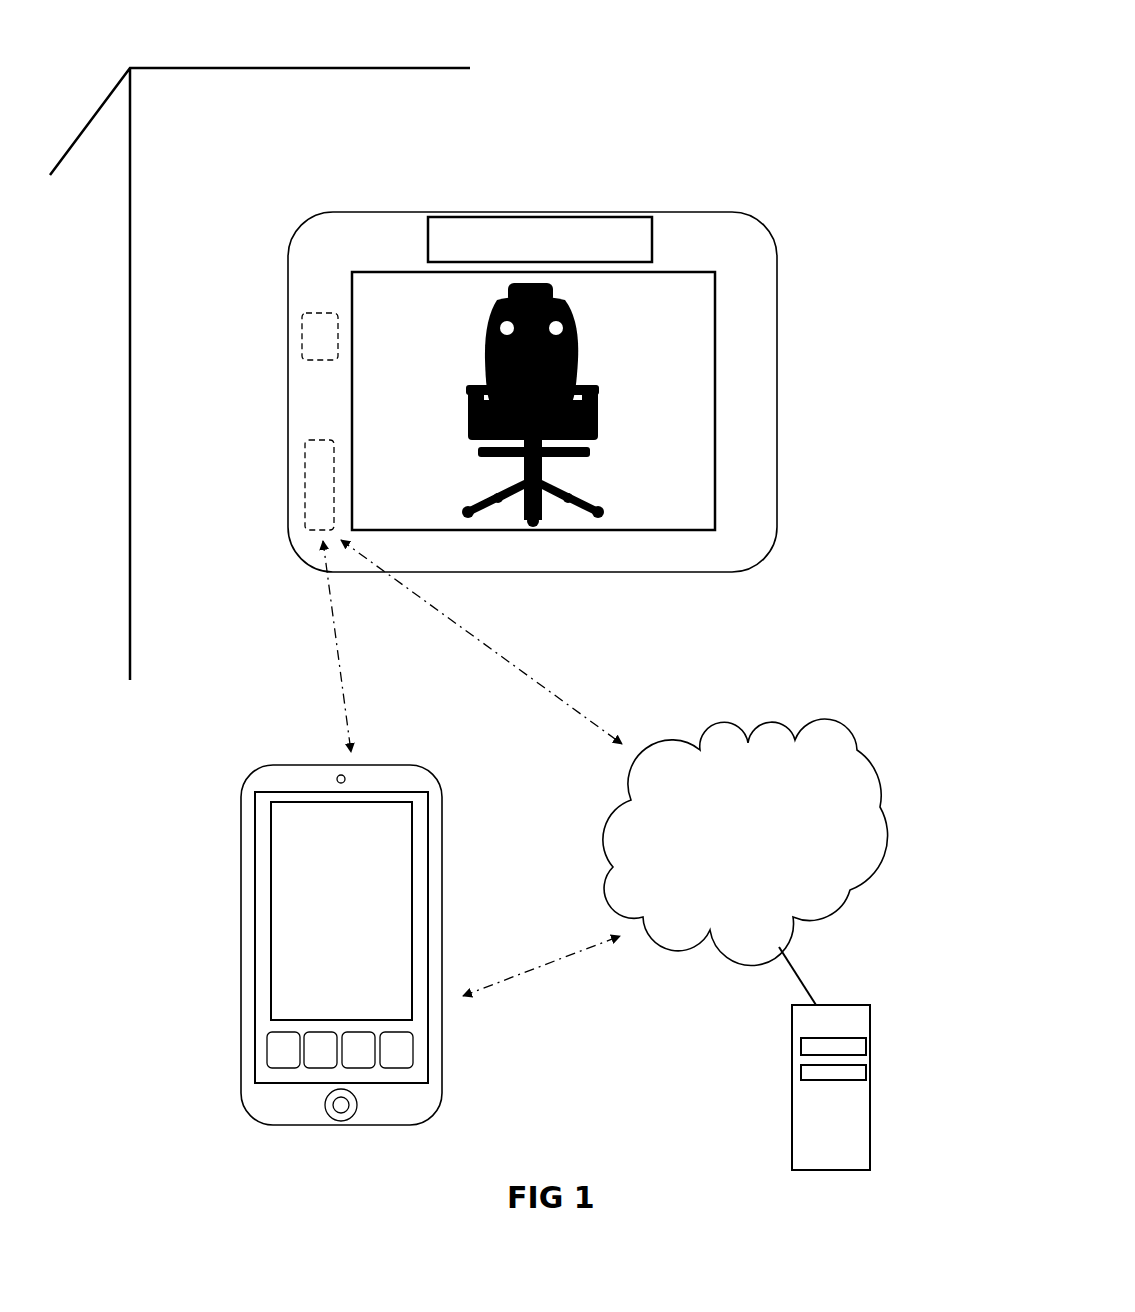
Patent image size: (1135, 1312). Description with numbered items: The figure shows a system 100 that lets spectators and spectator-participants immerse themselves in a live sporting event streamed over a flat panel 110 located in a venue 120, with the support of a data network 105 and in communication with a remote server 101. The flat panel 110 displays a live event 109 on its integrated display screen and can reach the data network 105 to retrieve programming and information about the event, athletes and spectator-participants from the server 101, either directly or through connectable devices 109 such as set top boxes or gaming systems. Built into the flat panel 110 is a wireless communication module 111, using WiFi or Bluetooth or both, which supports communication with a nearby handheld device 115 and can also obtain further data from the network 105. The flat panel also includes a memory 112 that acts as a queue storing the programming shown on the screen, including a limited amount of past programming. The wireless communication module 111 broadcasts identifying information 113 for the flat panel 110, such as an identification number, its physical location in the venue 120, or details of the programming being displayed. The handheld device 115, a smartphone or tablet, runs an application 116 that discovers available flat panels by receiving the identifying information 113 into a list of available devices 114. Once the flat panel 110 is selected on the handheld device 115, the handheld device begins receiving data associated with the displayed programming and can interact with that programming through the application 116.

The system 100 is at (790, 102).
The server 101 is at (862, 1020).
The data network 105 is at (825, 794).
The live event 109 is at (685, 309).
The flat panel 110 is at (766, 272).
The wireless communication module 111 is at (305, 460).
The memory 112 is at (305, 334).
The identifying information 113 is at (560, 219).
The list of available devices 114 is at (406, 893).
The handheld device 115 is at (285, 778).
The application 116 is at (272, 1053).
The venue 120 is at (132, 213).